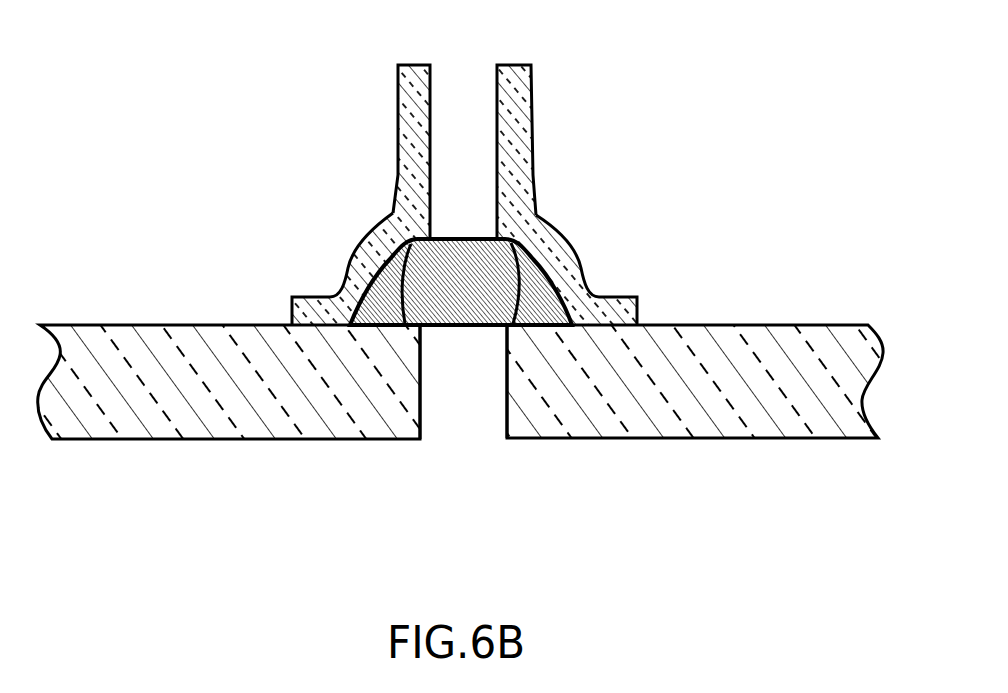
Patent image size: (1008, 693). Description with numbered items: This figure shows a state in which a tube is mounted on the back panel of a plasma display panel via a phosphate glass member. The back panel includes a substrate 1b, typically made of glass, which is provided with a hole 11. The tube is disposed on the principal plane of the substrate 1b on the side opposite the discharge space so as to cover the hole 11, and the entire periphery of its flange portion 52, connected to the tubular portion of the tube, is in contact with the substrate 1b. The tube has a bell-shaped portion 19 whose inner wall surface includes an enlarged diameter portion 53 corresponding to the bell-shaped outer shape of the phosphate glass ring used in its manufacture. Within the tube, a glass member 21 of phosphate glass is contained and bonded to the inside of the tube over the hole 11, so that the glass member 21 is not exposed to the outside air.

The substrate 1b is at (728, 425).
The hole 11 is at (465, 425).
The bell-shaped portion 19 is at (515, 180).
The glass member 21 is at (557, 277).
The flange portion 52 is at (622, 305).
The enlarged diameter portion 53 is at (354, 265).